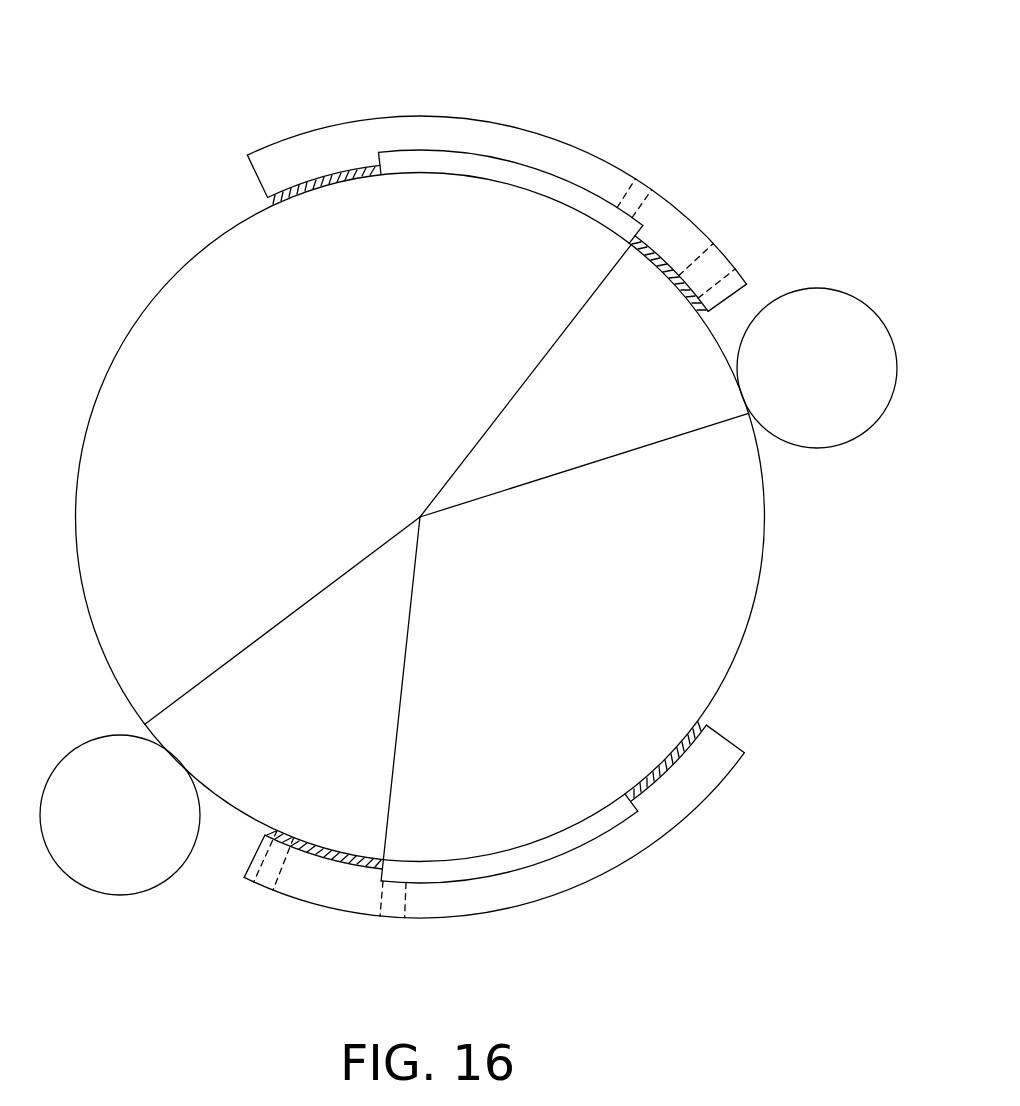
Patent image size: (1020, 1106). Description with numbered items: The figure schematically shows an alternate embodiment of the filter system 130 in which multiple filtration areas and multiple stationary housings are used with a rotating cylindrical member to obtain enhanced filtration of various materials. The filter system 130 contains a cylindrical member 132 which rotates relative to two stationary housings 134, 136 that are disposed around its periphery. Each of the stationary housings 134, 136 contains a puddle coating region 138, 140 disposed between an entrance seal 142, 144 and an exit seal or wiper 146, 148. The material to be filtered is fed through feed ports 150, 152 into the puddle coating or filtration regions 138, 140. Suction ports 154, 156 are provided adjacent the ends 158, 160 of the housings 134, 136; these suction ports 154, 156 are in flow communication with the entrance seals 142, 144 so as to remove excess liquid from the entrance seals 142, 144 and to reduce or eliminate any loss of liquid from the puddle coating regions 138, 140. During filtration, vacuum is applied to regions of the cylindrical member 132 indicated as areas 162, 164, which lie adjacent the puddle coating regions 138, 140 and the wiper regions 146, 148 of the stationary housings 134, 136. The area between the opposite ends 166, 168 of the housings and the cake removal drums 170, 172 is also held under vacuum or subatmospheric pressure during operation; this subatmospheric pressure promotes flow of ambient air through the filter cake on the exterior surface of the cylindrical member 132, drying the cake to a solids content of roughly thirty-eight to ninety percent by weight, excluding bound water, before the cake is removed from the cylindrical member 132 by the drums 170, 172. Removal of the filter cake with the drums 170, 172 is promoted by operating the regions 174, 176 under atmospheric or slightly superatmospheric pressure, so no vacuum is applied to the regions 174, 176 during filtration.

The filter system 130 is at (676, 120).
The cylindrical member 132 is at (93, 407).
The stationary housing 134 is at (560, 882).
The stationary housing 136 is at (475, 133).
The puddle coating region 138 is at (595, 832).
The puddle coating region 140 is at (488, 168).
The entrance seal 142 is at (339, 847).
The entrance seal 144 is at (658, 271).
The exit seal or wiper 146 is at (640, 775).
The exit seal or wiper 148 is at (320, 191).
The feed port 150 is at (380, 916).
The feed port 152 is at (657, 187).
The suction port 154 is at (254, 882).
The suction port 156 is at (743, 250).
The end of housing 158 is at (260, 853).
The end of housing 160 is at (747, 287).
The vacuum area 162 is at (586, 645).
The vacuum area 164 is at (336, 430).
The end of housing 166 is at (733, 735).
The end of housing 168 is at (253, 172).
The cake removal drum 170 is at (848, 383).
The cake removal drum 172 is at (148, 832).
The atmospheric pressure region 174 is at (316, 736).
The atmospheric pressure region 176 is at (624, 408).